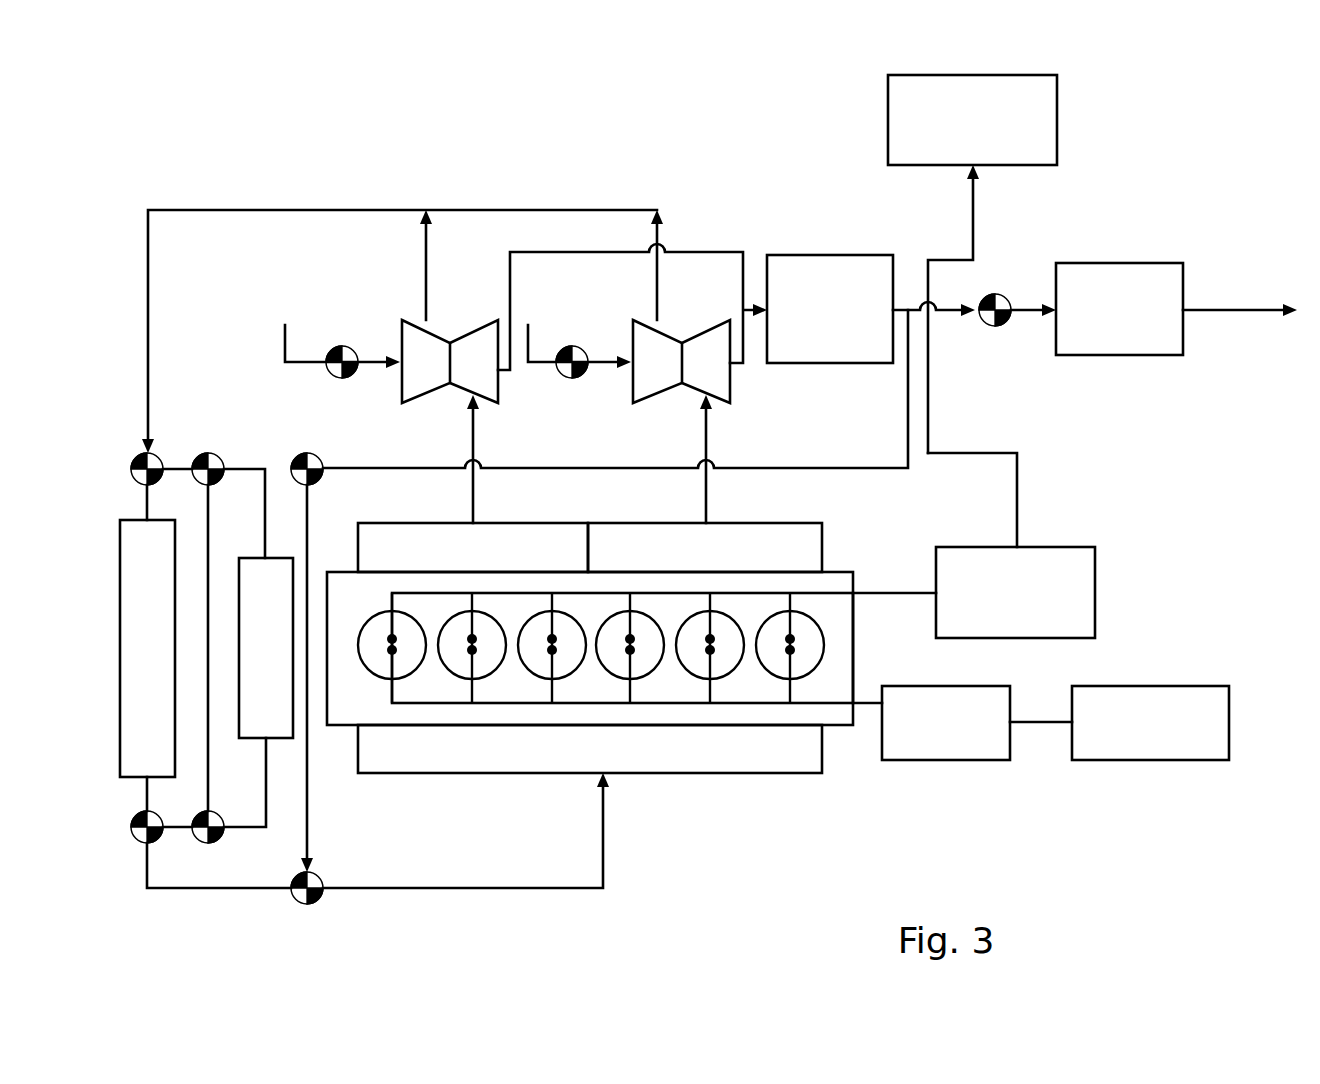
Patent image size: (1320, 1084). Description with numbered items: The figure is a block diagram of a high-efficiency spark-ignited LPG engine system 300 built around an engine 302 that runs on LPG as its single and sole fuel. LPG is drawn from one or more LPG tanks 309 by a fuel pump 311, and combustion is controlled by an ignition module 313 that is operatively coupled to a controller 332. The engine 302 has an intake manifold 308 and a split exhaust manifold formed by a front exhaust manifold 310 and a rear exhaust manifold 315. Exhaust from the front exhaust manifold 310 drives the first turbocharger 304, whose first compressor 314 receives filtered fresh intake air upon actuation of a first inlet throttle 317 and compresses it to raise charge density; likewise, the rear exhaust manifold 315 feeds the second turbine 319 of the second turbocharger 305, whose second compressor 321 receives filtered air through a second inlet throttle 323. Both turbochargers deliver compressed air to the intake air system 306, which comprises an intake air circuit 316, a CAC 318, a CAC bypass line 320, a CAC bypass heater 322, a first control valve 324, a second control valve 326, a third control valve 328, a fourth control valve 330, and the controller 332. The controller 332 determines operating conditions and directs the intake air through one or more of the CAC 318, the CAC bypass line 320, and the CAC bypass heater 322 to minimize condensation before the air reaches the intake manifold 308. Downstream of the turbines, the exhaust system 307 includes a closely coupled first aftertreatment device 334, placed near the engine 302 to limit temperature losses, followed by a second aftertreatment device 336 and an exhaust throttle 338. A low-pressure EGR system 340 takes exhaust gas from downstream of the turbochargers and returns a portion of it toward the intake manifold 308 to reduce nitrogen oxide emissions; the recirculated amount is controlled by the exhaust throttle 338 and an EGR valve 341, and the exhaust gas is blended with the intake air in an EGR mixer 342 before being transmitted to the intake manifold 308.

The engine system 300 is at (1117, 124).
The engine 302 is at (855, 674).
The first turbocharger 304 is at (478, 356).
The second turbocharger 305 is at (710, 356).
The intake air system 306 is at (188, 180).
The exhaust system 307 is at (767, 229).
The intake manifold 308 is at (590, 749).
The LPG tank 309 is at (1119, 723).
The front exhaust manifold 310 is at (473, 547).
The fuel pump 311 is at (931, 723).
The ignition module 313 is at (974, 592).
The first compressor 314 is at (498, 403).
The rear exhaust manifold 315 is at (705, 547).
The intake air circuit 316 is at (402, 403).
The first inlet throttle 317 is at (320, 355).
The CAC 318 is at (147, 648).
The second turbine 319 is at (633, 403).
The CAC bypass line 320 is at (210, 541).
The second compressor 321 is at (730, 403).
The CAC bypass heater 322 is at (258, 648).
The second inlet throttle 323 is at (574, 354).
The first control valve 324 is at (150, 485).
The second control valve 326 is at (212, 453).
The third control valve 328 is at (132, 825).
The fourth control valve 330 is at (210, 842).
The controller 332 is at (972, 311).
The first aftertreatment device 334 is at (830, 309).
The second aftertreatment device 336 is at (1178, 309).
The exhaust throttle 338 is at (974, 352).
The EGR system 340 is at (875, 466).
The EGR valve 341 is at (306, 453).
The EGR mixer 342 is at (378, 711).